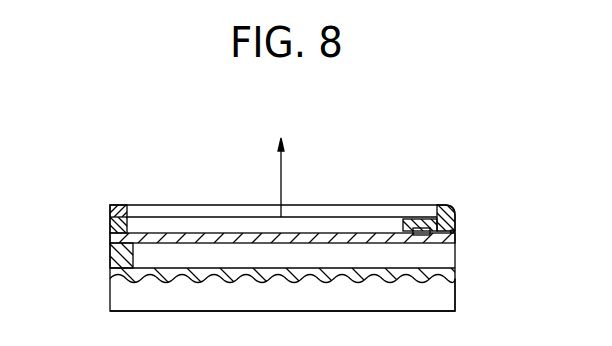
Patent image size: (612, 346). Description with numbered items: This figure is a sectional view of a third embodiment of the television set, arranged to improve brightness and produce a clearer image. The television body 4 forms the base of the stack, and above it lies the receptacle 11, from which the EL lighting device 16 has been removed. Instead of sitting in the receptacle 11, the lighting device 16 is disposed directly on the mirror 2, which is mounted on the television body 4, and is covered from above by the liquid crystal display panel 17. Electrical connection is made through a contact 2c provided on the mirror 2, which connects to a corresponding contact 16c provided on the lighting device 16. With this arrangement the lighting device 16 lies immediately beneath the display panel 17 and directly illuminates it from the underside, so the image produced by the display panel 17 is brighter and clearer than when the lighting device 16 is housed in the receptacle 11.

The EL lighting device 16 is at (112, 226).
The mirror 2 is at (110, 237).
The contact 16c is at (423, 220).
The liquid crystal display panel 17 is at (440, 205).
The contact 2c is at (432, 233).
The receptacle 11 is at (448, 256).
The television body 4 is at (448, 298).